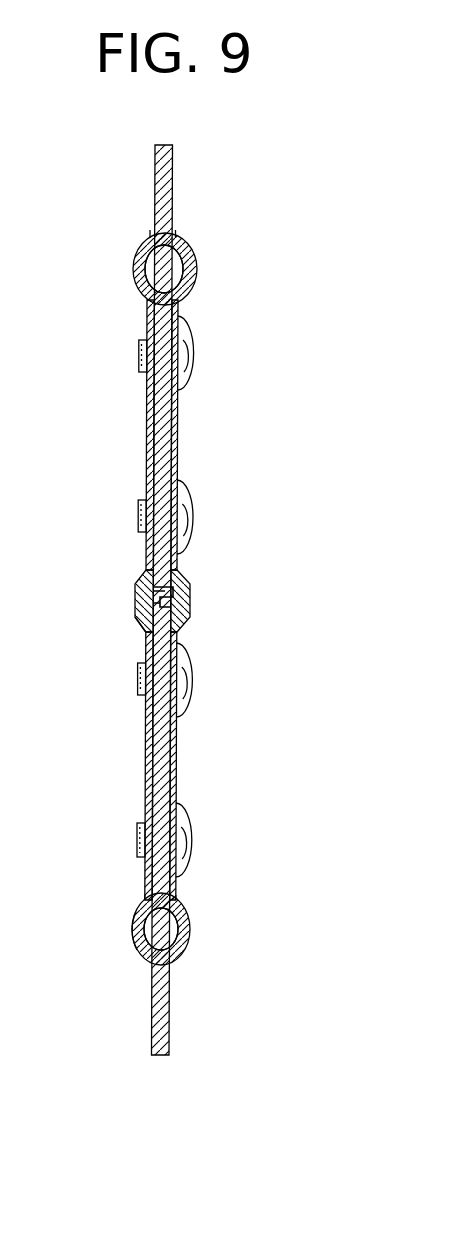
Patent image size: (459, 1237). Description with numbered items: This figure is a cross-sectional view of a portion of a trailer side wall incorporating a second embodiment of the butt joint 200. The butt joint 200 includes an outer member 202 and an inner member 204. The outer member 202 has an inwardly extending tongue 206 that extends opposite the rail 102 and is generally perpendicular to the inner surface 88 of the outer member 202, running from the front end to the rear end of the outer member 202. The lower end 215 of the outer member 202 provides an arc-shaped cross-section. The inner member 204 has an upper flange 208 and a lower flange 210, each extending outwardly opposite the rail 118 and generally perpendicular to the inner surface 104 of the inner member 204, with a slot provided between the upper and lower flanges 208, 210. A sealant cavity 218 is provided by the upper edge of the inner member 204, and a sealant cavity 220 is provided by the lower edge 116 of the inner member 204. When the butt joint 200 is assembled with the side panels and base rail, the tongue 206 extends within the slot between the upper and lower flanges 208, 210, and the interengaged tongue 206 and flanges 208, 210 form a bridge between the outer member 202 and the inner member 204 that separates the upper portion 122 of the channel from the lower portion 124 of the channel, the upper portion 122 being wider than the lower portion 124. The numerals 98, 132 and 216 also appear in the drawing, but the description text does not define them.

The butt joint 200 is at (274, 984).
The first ball end 98 is at (133, 256).
The sealant cavity 218 is at (180, 270).
The rod 132 is at (156, 259).
The upper portion of the channel 122 is at (163, 342).
The inner surface of the outer member 88 is at (153, 397).
The outer member 202 is at (147, 444).
The inner member 204 is at (178, 447).
The rail 102 is at (112, 600).
The upper flange 208 is at (150, 591).
The tongue 206 is at (160, 586).
The rail 118 is at (180, 597).
The lower flange 210 is at (143, 605).
The inner surface of the inner member 104 is at (168, 752).
The lower end of the outer member 215 is at (143, 903).
The lower portion of the channel 124 is at (175, 898).
The lower edge of the inner member 116 is at (183, 903).
The second ball outer surface 216 is at (140, 943).
The sealant cavity 220 is at (180, 943).